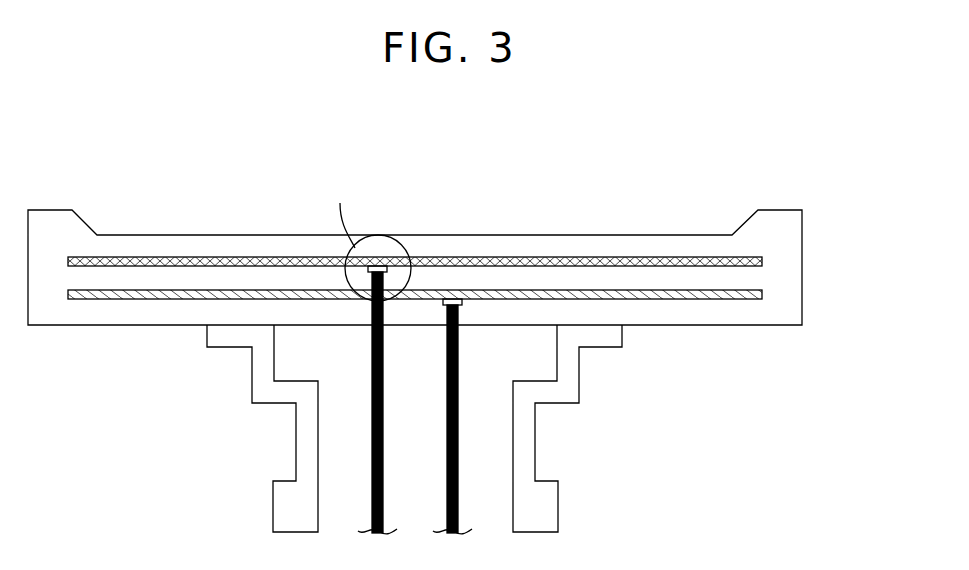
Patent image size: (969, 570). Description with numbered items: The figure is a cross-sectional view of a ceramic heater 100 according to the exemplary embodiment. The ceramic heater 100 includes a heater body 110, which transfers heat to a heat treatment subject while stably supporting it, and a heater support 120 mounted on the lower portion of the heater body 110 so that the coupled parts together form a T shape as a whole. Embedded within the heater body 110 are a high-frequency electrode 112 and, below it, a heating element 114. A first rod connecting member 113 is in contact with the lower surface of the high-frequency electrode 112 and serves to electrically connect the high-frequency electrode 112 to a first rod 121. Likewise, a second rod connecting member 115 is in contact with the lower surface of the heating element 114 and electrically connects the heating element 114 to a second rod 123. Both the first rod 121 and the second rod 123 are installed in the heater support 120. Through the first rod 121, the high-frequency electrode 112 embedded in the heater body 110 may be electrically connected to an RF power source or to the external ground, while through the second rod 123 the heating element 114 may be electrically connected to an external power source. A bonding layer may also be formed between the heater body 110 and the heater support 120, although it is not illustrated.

The ceramic heater 100 is at (76, 132).
The heater body 110 is at (789, 196).
The high-frequency electrode 112 is at (763, 262).
The first rod connecting member 113 is at (378, 266).
The heating element 114 is at (763, 294).
The second rod connecting member 115 is at (460, 305).
The heater support 120 is at (619, 394).
The first rod 121 is at (373, 448).
The second rod 123 is at (458, 450).